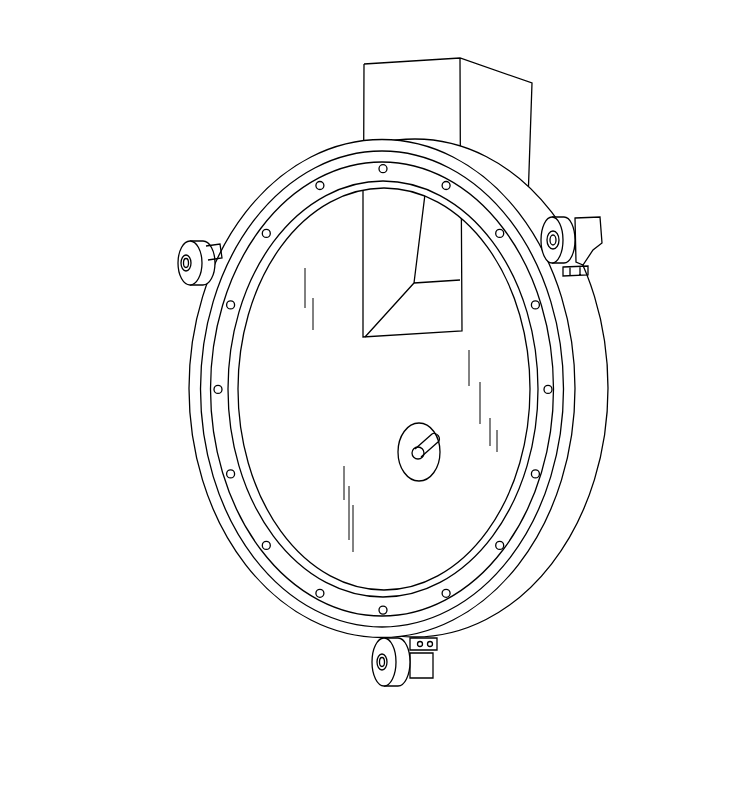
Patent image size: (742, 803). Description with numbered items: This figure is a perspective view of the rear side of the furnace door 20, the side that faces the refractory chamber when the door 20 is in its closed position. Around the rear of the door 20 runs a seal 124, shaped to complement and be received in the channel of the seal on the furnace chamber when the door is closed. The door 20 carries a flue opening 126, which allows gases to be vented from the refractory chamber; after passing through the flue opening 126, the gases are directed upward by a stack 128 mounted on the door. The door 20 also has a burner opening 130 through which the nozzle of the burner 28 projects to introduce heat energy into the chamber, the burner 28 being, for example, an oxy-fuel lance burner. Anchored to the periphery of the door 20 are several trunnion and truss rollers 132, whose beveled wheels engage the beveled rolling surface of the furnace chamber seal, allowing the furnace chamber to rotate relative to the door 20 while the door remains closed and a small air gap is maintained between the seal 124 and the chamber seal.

The door 20 is at (282, 126).
The burner 28 is at (433, 450).
The seal 124 is at (545, 450).
The flue opening 126 is at (447, 318).
The stack 128 is at (492, 98).
The burner opening 130 is at (417, 470).
The trunnion and truss rollers 132 is at (210, 247).